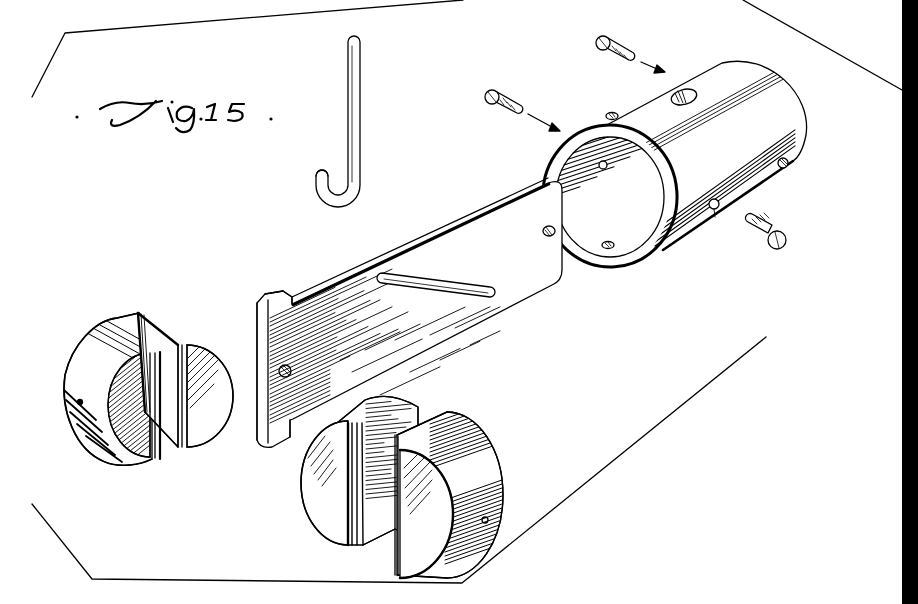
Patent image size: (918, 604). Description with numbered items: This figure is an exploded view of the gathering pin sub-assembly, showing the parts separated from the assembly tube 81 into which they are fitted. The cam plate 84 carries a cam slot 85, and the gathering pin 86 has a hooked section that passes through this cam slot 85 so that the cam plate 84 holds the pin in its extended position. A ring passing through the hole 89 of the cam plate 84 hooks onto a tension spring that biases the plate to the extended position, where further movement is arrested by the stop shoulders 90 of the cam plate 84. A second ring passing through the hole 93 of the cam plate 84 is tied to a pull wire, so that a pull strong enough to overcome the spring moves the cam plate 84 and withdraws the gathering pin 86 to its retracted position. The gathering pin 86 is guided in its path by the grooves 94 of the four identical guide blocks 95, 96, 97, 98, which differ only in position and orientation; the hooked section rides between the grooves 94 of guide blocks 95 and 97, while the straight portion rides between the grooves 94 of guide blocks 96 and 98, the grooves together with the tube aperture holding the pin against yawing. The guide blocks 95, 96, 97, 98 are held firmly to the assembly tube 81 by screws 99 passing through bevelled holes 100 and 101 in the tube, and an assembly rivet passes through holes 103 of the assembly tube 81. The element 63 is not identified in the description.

The opening in casing 63 is at (683, 93).
The assembly tube 81 is at (652, 107).
The cam plate 84 is at (430, 240).
The cam slot 85 is at (447, 280).
The gathering pin 86 is at (361, 86).
The hole 89 is at (545, 229).
The stop shoulders 90 is at (317, 187).
The hole 93 is at (256, 322).
The grooves 94 is at (178, 448).
The guide block 95 is at (408, 400).
The guide block 96 is at (448, 422).
The guide block 97 is at (165, 322).
The guide block 98 is at (83, 353).
The screws 99 is at (497, 90).
The bevelled holes 100 is at (599, 163).
The bevelled holes 101 is at (784, 170).
The holes 103 is at (608, 114).